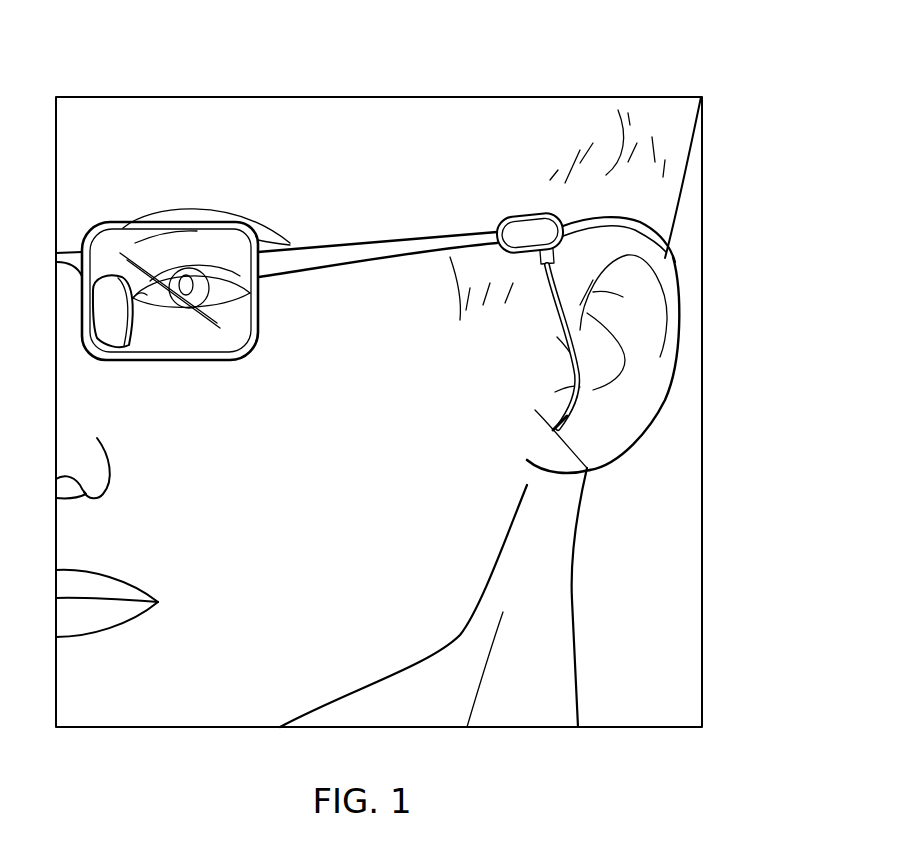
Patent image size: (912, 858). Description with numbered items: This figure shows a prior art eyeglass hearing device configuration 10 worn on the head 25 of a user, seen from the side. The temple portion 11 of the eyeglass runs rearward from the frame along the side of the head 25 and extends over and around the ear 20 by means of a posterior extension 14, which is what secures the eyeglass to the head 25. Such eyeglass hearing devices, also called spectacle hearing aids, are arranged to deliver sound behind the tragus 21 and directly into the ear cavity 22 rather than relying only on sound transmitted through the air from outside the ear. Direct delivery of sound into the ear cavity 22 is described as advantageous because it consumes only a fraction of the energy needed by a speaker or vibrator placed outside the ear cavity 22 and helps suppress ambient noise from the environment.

The eyeglass hearing device configuration 10 is at (128, 222).
The temple portion 11 is at (377, 245).
The posterior extension 14 is at (602, 220).
The ear 20 is at (675, 288).
The tragus 21 is at (570, 377).
The ear cavity 22 is at (587, 468).
The head 25 is at (218, 138).